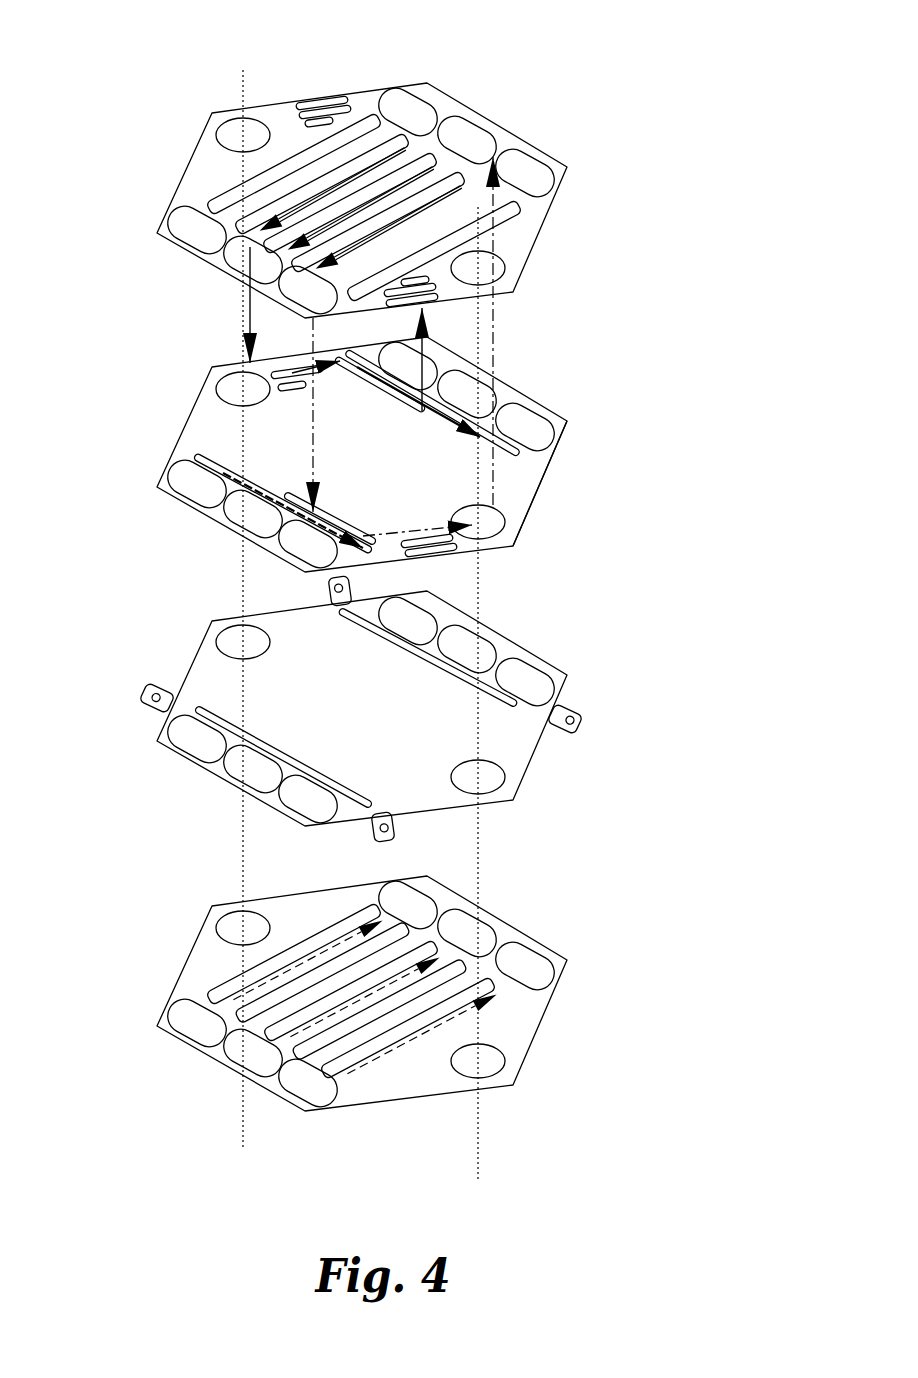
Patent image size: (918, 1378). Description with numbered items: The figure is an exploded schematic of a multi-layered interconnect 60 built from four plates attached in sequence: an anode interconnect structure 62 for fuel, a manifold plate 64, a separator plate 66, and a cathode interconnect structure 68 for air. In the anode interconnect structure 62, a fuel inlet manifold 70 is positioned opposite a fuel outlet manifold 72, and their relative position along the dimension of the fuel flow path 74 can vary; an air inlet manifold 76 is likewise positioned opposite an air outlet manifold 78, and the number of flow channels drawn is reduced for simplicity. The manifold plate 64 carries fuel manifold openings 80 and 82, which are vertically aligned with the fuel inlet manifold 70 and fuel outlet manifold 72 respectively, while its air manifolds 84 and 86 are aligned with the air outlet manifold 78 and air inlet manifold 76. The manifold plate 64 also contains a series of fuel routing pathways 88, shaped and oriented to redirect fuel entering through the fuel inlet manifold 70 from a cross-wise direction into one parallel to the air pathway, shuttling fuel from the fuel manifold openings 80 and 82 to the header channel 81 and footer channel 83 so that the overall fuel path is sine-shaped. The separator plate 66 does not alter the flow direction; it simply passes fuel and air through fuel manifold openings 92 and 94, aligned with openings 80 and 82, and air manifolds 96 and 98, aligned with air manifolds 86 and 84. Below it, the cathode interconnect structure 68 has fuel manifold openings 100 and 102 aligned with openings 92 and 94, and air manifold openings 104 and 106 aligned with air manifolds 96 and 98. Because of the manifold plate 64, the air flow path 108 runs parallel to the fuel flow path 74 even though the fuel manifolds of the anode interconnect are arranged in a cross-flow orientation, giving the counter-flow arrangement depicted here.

The interconnect 60 is at (121, 48).
The anode interconnect structure 62 is at (556, 205).
The manifold plate 64 is at (560, 457).
The separator plate 66 is at (568, 680).
The cathode interconnect structure 68 is at (565, 975).
The fuel inlet manifold 70 is at (257, 128).
The fuel outlet manifold 72 is at (498, 270).
The fuel flow path 74 is at (382, 152).
The air inlet manifold 76 is at (233, 257).
The air outlet manifold 78 is at (468, 130).
The fuel manifold opening 80 is at (220, 383).
The header channel 81 is at (195, 452).
The fuel manifold opening 82 is at (497, 522).
The footer channel 83 is at (540, 470).
The air manifold 84 is at (492, 392).
The air manifold 86 is at (235, 518).
The fuel routing pathways 88 is at (292, 392).
The fuel manifold opening 92 is at (218, 638).
The fuel manifold opening 94 is at (498, 778).
The air manifold 96 is at (235, 763).
The air manifold 98 is at (485, 650).
The fuel manifold opening 100 is at (220, 925).
The fuel manifold opening 102 is at (495, 1068).
The air manifold opening 104 is at (235, 1052).
The air manifold opening 106 is at (485, 935).
The air flow path 108 is at (328, 1080).